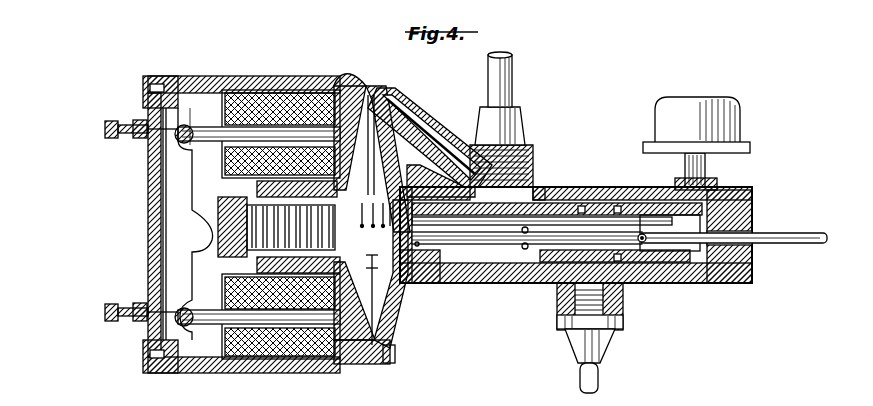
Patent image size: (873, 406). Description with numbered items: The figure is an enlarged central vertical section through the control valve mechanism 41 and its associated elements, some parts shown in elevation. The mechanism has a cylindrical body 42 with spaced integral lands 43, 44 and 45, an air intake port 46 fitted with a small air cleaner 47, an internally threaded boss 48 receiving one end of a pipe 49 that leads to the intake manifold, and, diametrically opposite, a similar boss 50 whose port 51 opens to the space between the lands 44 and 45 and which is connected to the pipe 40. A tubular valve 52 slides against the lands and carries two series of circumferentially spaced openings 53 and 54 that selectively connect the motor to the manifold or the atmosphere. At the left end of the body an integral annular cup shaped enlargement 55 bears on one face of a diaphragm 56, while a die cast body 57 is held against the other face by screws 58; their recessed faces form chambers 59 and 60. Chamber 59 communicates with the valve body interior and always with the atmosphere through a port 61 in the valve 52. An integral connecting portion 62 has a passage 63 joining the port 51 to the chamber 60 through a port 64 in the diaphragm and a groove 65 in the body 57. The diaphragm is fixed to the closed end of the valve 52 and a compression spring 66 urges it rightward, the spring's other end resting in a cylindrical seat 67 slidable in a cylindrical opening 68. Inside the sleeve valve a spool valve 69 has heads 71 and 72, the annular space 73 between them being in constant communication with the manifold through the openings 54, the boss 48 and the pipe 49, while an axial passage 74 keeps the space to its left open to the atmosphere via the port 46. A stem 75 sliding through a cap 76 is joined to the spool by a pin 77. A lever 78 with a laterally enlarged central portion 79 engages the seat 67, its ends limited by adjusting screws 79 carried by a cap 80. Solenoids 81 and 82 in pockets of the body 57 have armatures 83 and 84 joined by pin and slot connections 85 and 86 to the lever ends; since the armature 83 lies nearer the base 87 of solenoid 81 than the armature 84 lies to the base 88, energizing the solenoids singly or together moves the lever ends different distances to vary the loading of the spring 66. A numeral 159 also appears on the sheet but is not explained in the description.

The pipe 40 is at (512, 93).
The control valve mechanism 41 is at (483, 285).
The cylindrical body 42 is at (590, 217).
The land 43 is at (655, 212).
The land 44 is at (556, 203).
The land 45 is at (441, 181).
The air intake port 46 is at (720, 192).
The air cleaner 47 is at (745, 130).
The internally threaded boss 48 is at (615, 308).
The pipe 49 is at (600, 380).
The boss 50 is at (533, 162).
The port 51 is at (535, 190).
The tubular valve 52 is at (470, 283).
The openings 53 is at (528, 283).
The openings 54 is at (630, 203).
The annular cup shaped enlargement 55 is at (398, 322).
The diaphragm 56 is at (372, 318).
The die cast body 57 is at (325, 372).
The screws 58 is at (390, 365).
The chamber 59 is at (440, 130).
The chamber 60 is at (372, 270).
The port 61 is at (428, 242).
The connecting portion 62 is at (450, 127).
The passage 63 is at (462, 142).
The port 64 is at (383, 92).
The groove 65 is at (370, 90).
The compression spring 66 is at (369, 207).
The cylindrical seat 67 is at (242, 202).
The cylindrical opening 68 is at (372, 258).
The spool valve 69 is at (581, 205).
The head 71 is at (688, 185).
The head 72 is at (542, 283).
The annular space 73 is at (616, 205).
The axial passage 74 is at (527, 237).
The stem 75 is at (775, 233).
The cap 76 is at (752, 206).
The pin 77 is at (637, 238).
The lever 78 is at (188, 224).
The adjusting screws 79 is at (122, 140).
The cap 80 is at (162, 262).
The solenoid 81 is at (270, 95).
The solenoid 82 is at (258, 360).
The armature 83 is at (230, 127).
The armature 84 is at (212, 325).
The connection 85 is at (188, 125).
The connection 86 is at (183, 327).
The base 87 is at (340, 77).
The base 88 is at (352, 365).
The lead 159 is at (518, 400).